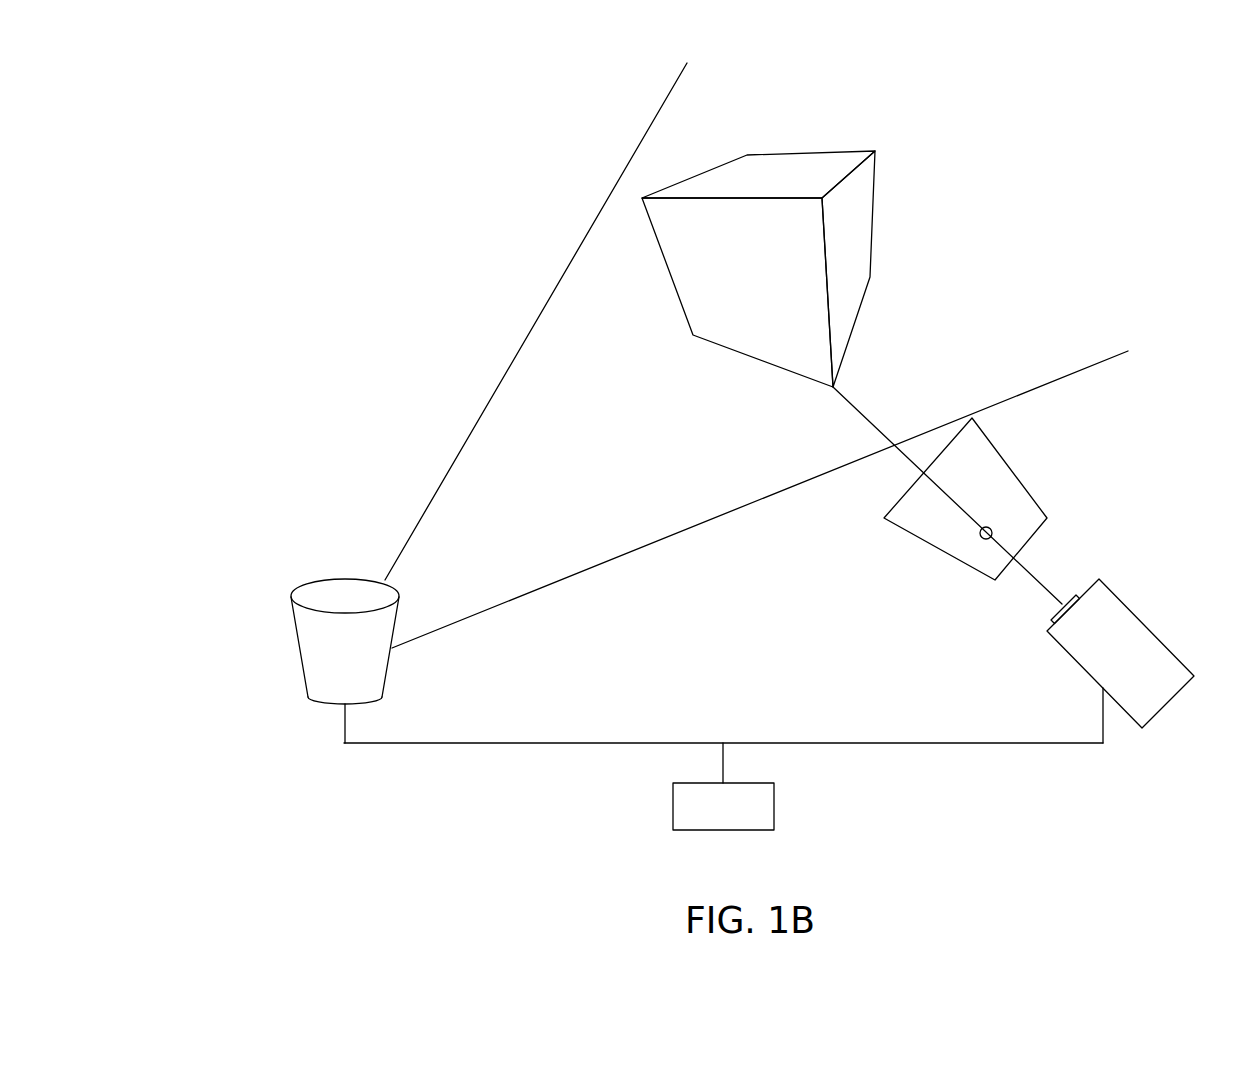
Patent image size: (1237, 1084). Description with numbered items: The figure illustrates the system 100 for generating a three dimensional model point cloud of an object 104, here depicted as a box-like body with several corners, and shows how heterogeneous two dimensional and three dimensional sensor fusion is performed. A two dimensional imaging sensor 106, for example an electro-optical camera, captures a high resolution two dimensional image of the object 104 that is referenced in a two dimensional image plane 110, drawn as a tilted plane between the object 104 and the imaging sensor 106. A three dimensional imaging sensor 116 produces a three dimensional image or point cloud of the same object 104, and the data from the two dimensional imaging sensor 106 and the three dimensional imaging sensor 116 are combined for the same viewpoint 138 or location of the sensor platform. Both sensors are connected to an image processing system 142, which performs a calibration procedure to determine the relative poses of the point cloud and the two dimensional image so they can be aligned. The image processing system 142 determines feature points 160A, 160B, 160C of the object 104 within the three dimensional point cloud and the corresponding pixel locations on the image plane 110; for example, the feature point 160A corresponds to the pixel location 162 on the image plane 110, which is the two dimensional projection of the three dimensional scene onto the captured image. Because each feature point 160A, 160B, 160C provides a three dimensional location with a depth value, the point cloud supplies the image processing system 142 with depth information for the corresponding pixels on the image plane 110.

The system 100 is at (291, 649).
The object 104 is at (774, 269).
The 2D imaging sensor 106 is at (1148, 628).
The 2D image plane 110 is at (1013, 467).
The 3D imaging sensor 116 is at (385, 672).
The viewpoint 138 is at (532, 323).
The image processing system 142 is at (775, 807).
The feature point 160A is at (835, 388).
The feature point 160B is at (812, 202).
The feature point 160C is at (642, 198).
The pixel location 162 is at (980, 534).